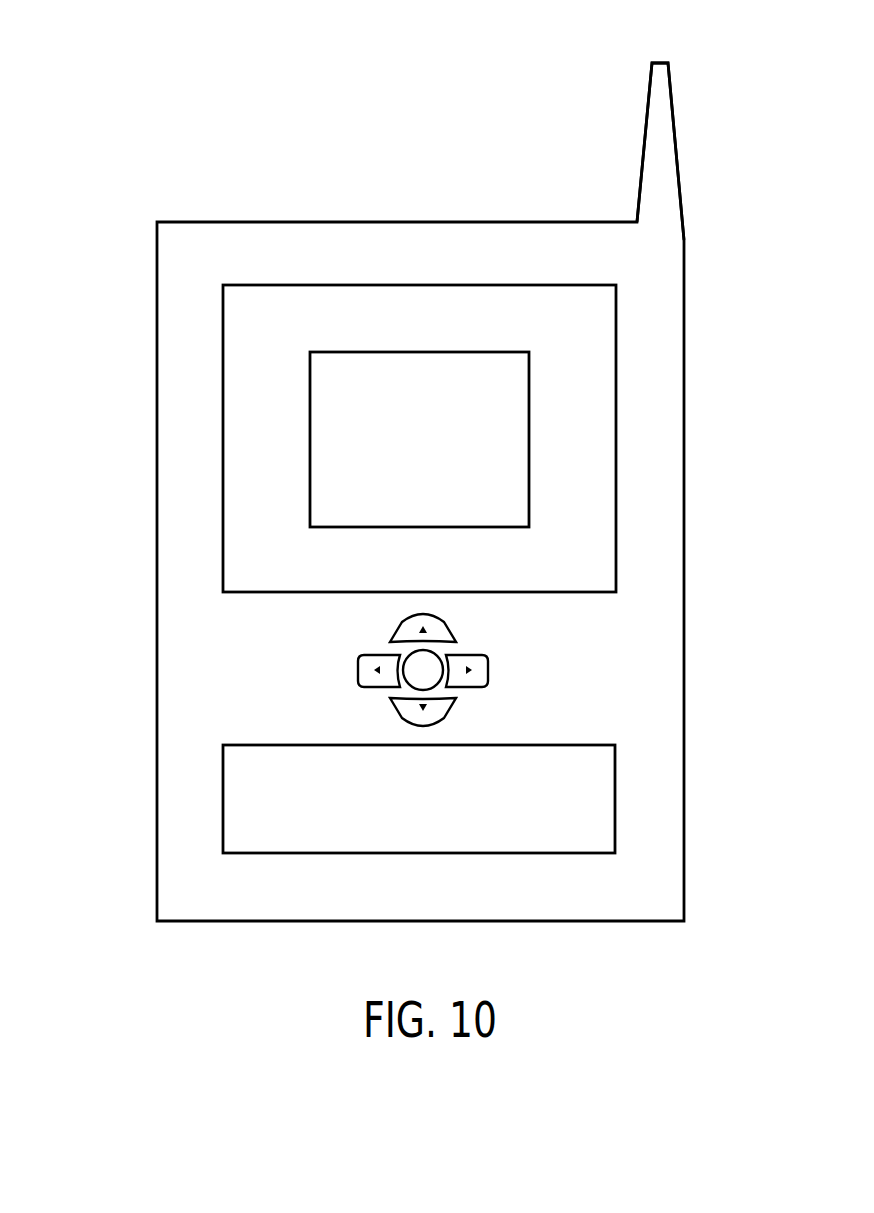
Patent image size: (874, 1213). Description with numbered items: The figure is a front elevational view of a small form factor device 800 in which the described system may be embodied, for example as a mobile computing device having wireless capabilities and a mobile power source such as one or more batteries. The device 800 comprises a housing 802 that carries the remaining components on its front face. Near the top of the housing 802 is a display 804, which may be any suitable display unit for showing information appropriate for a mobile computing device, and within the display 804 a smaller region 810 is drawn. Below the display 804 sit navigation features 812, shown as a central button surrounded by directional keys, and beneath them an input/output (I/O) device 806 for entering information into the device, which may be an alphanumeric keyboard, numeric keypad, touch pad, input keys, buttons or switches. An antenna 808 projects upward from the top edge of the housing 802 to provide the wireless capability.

The small form factor device 800 is at (150, 156).
The housing 802 is at (157, 662).
The display 804 is at (616, 342).
The input/output (I/O) device 806 is at (616, 798).
The antenna 808 is at (644, 143).
The display window 810 is at (418, 352).
The navigation features 812 is at (522, 672).